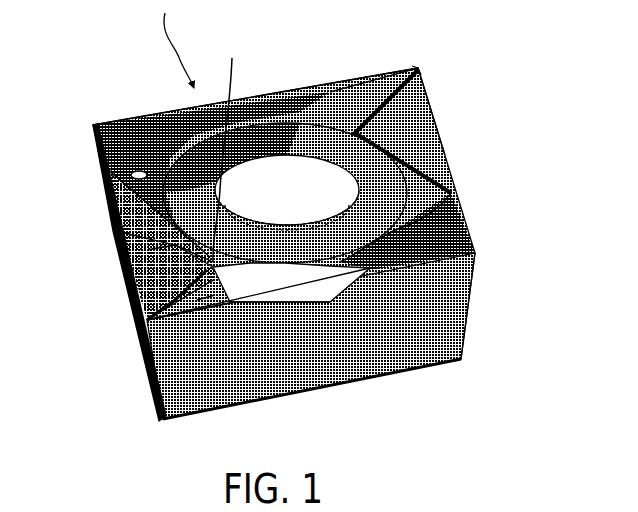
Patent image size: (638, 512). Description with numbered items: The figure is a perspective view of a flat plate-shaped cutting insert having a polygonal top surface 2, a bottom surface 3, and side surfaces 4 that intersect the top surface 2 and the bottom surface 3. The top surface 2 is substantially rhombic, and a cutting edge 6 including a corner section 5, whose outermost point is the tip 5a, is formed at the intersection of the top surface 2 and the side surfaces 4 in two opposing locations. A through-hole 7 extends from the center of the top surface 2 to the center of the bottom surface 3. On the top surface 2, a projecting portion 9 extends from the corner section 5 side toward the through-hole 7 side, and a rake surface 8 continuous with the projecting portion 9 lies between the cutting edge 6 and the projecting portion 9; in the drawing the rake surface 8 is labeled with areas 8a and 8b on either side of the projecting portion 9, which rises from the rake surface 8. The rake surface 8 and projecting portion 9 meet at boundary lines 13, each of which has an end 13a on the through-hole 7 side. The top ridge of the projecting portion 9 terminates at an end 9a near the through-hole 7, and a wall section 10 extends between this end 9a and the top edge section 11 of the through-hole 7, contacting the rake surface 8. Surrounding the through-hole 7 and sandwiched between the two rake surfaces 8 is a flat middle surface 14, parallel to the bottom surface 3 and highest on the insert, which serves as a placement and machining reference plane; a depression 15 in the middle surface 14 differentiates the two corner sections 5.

The top surface 2 is at (284, 243).
The bottom surface 3 is at (297, 397).
The side surfaces 4 is at (437, 318).
The corner section 5 is at (438, 78).
The tip of the corner section 5a is at (418, 60).
The cutting edge 6 is at (398, 70).
The through-hole 7 is at (285, 203).
The rake surface 8 is at (60, 256).
The chip breaker wall 8a is at (145, 273).
The chip breaker wall 8b is at (160, 295).
The projecting portion 9 is at (197, 300).
The end of the projecting portion 9a is at (229, 145).
The wall section 10 is at (125, 208).
The top edge section 11 is at (451, 192).
The boundary lines 13 is at (220, 299).
The end of the boundary line 13a is at (240, 306).
The middle surface 14 is at (160, 120).
The depression 15 is at (137, 170).